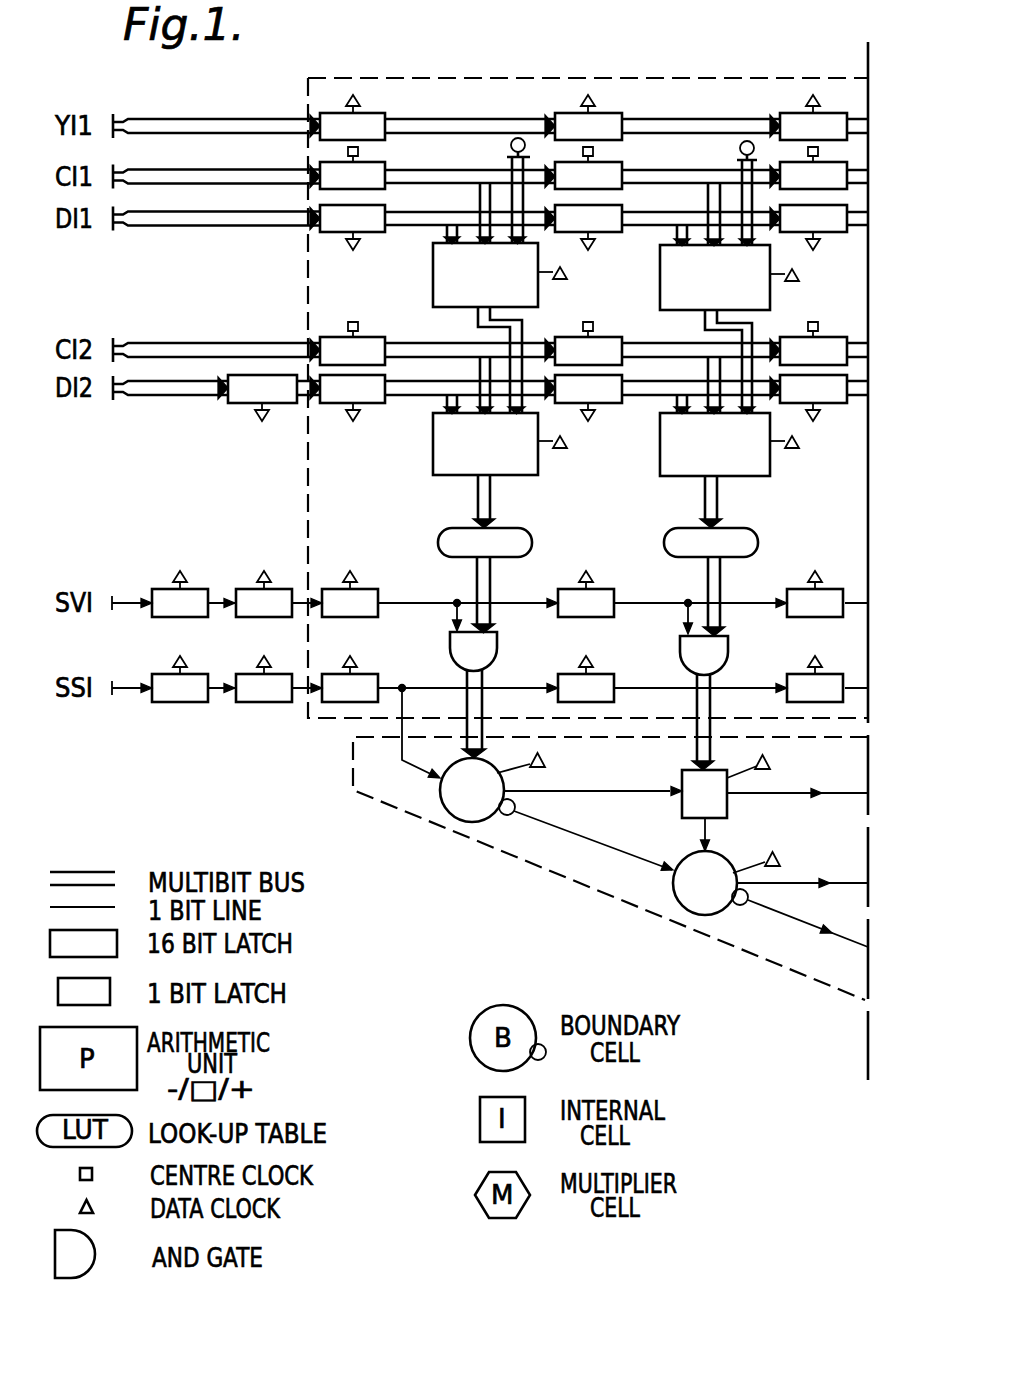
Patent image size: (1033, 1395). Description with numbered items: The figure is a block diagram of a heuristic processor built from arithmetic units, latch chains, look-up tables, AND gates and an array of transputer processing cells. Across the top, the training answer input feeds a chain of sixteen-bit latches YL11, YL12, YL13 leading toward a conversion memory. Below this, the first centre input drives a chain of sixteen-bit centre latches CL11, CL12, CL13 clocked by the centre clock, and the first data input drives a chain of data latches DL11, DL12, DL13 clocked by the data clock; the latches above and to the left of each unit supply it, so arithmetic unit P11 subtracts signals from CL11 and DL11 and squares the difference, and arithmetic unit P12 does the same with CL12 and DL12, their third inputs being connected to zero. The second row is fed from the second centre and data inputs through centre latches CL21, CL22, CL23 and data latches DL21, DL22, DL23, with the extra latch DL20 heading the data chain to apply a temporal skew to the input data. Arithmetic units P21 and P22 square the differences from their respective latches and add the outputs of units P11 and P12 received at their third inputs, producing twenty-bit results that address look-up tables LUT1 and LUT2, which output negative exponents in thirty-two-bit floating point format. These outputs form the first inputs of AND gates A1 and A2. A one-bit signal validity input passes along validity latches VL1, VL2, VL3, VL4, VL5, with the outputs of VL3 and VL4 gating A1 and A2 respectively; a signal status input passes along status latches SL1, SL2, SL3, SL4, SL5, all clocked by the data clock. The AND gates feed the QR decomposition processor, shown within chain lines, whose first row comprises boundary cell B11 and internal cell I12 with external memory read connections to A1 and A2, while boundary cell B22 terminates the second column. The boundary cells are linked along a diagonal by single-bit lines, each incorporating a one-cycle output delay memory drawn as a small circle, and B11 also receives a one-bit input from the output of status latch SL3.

The sixteen-bit latch YL11 is at (352, 117).
The sixteen-bit latch YL12 is at (588, 117).
The sixteen-bit latch YL13 is at (813, 117).
The centre latch CL11 is at (352, 168).
The centre latch CL12 is at (588, 168).
The centre latch CL13 is at (813, 168).
The data latch DL11 is at (352, 227).
The data latch DL12 is at (588, 227).
The data latch DL13 is at (813, 227).
The centre latch CL21 is at (352, 343).
The centre latch CL22 is at (588, 343).
The centre latch CL23 is at (813, 343).
The additional second row data latch DL20 is at (262, 398).
The data latch DL21 is at (352, 398).
The data latch DL22 is at (588, 398).
The data latch DL23 is at (813, 398).
The arithmetic unit P11 is at (483, 272).
The arithmetic unit P12 is at (712, 274).
The arithmetic unit P21 is at (483, 441).
The arithmetic unit P22 is at (712, 441).
The look-up table LUT1 is at (485, 542).
The look-up table LUT2 is at (711, 542).
The validity latch VL1 is at (180, 594).
The validity latch VL2 is at (264, 594).
The validity latch VL3 is at (350, 594).
The validity latch VL4 is at (586, 594).
The validity latch VL5 is at (815, 594).
The status latch SL1 is at (180, 679).
The status latch SL2 is at (264, 679).
The status latch SL3 is at (350, 679).
The status latch SL4 is at (586, 679).
The status latch SL5 is at (815, 679).
The AND gate A1 is at (473, 651).
The AND gate A2 is at (704, 655).
The boundary cell B11 is at (492, 787).
The boundary cell B22 is at (726, 883).
The internal cell I12 is at (726, 786).